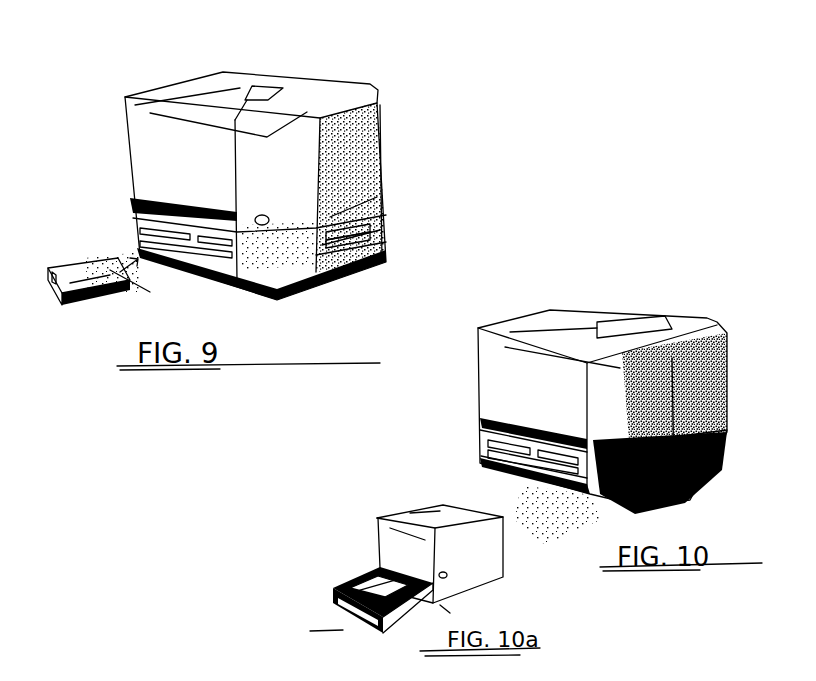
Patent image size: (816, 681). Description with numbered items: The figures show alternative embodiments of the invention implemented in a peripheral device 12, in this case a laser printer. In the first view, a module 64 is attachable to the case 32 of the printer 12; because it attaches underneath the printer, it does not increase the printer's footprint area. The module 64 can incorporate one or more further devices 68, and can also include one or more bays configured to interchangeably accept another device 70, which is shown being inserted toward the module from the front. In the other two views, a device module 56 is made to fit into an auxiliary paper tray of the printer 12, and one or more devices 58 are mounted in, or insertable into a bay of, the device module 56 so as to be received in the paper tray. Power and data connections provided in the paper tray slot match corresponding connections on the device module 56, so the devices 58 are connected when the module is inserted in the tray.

In FIG. 9, the peripheral device 12 is at (245, 174).
In FIG. 10, the peripheral device 12 is at (573, 401).
In FIG. 10A, the peripheral device 12 is at (406, 554).
In FIG. 9, the case 32 is at (377, 153).
In FIG. 10, the device module 56 is at (483, 450).
In FIG. 10A, the device module 56 is at (370, 575).
In FIG. 10, the device 58 is at (526, 472).
In FIG. 10A, the device 58 is at (345, 588).
In FIG. 9, the module 64 is at (352, 270).
In FIG. 9, the further device 68 is at (208, 276).
In FIG. 9, the device 70 is at (133, 243).